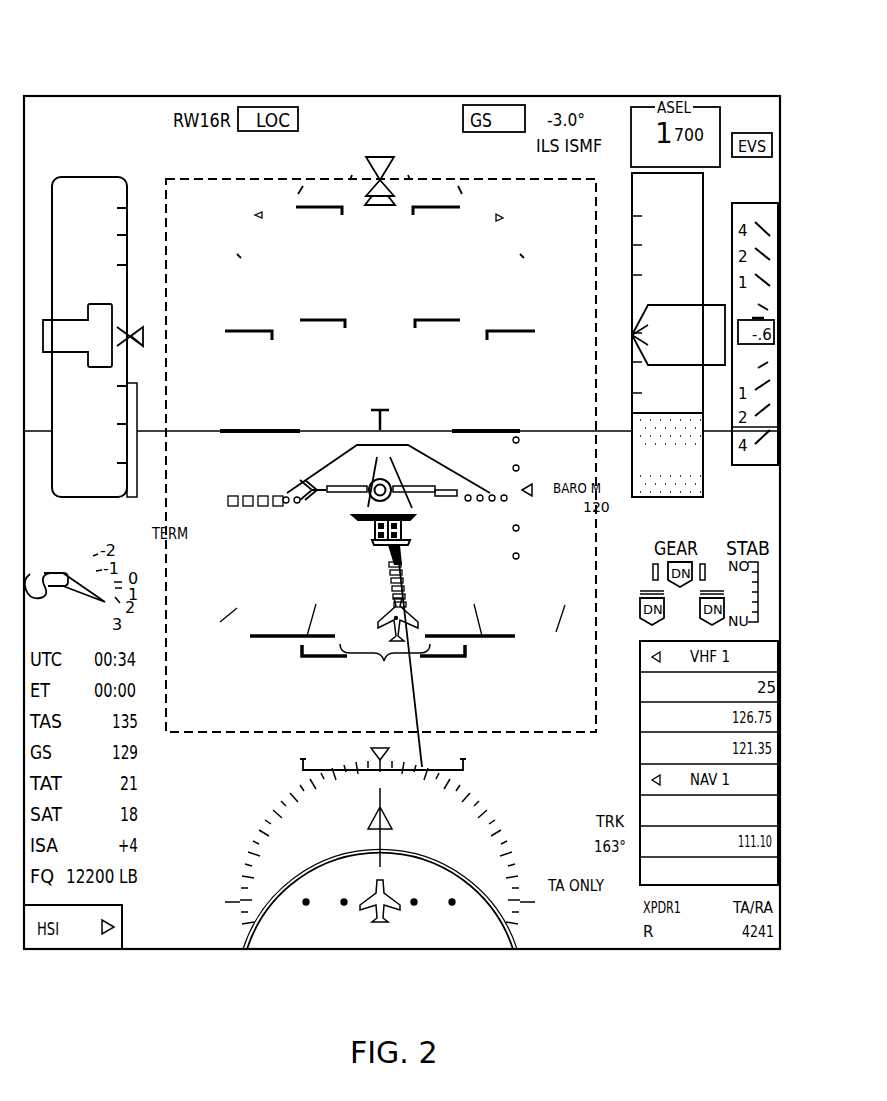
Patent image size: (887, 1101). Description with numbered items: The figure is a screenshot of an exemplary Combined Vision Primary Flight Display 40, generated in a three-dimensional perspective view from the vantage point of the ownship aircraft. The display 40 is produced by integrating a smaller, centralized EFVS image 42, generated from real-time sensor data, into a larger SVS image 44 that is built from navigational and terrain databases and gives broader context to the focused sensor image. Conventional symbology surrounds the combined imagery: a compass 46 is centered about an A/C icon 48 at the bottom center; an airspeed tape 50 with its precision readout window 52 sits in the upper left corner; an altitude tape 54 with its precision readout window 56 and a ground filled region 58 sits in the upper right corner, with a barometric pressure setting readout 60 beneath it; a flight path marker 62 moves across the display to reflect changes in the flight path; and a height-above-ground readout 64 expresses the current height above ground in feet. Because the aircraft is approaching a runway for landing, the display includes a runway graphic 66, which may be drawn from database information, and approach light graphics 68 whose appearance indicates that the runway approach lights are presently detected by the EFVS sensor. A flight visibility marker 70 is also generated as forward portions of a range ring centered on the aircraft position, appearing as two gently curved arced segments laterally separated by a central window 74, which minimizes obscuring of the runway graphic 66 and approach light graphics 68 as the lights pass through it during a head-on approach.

The Combined Vision Primary Flight Display 40 is at (128, 76).
The EFVS image 42 is at (396, 242).
The SVS image 44 is at (437, 117).
The compass 46 is at (255, 846).
The A/C icon 48 is at (393, 903).
The airspeed tape 50 is at (52, 184).
The precision readout window 52 is at (90, 318).
The altitude tape 54 is at (703, 192).
The precision readout window 56 is at (680, 306).
The ground filled region 58 is at (667, 455).
The barometric pressure setting readout 60 is at (692, 519).
The flight path marker 62 is at (432, 486).
The height-above-ground readout 64 is at (456, 524).
The runway graphic 66 is at (300, 486).
The approach light graphics 68 is at (404, 585).
The flight visibility marker 70 is at (260, 582).
The central window 74 is at (383, 668).